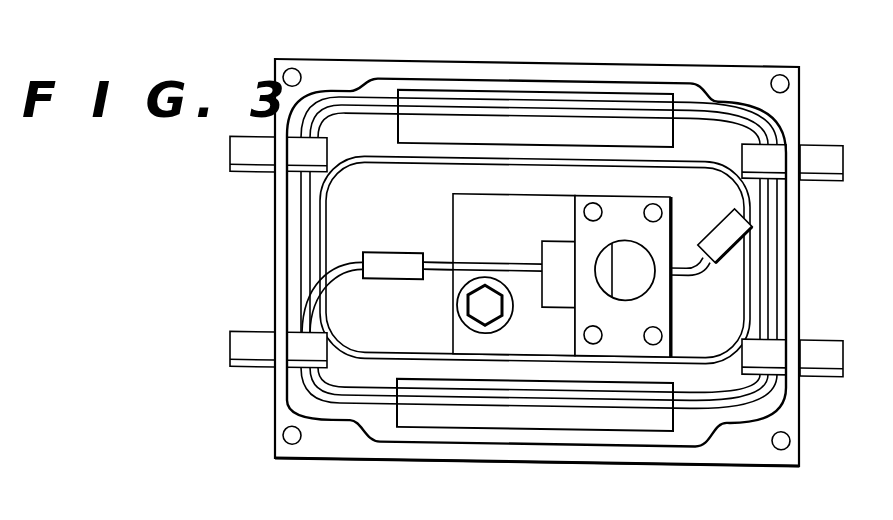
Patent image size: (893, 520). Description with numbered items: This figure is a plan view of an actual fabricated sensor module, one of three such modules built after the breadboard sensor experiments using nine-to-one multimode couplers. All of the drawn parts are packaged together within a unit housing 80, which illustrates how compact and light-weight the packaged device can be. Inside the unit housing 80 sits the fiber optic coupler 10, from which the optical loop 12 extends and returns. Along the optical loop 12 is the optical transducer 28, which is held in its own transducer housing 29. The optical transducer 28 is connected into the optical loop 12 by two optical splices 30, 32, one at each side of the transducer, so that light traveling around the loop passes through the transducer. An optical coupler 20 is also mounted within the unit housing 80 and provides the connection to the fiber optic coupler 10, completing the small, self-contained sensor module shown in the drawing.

The fiber optic coupler 10 is at (500, 121).
The optical loop 12 is at (292, 242).
The optical coupler 20 is at (510, 414).
The optical transducer 28 is at (543, 238).
The transducer housing 29 is at (680, 306).
The optical splice 30 is at (402, 256).
The optical splice 32 is at (727, 218).
The unit housing 80 is at (800, 418).